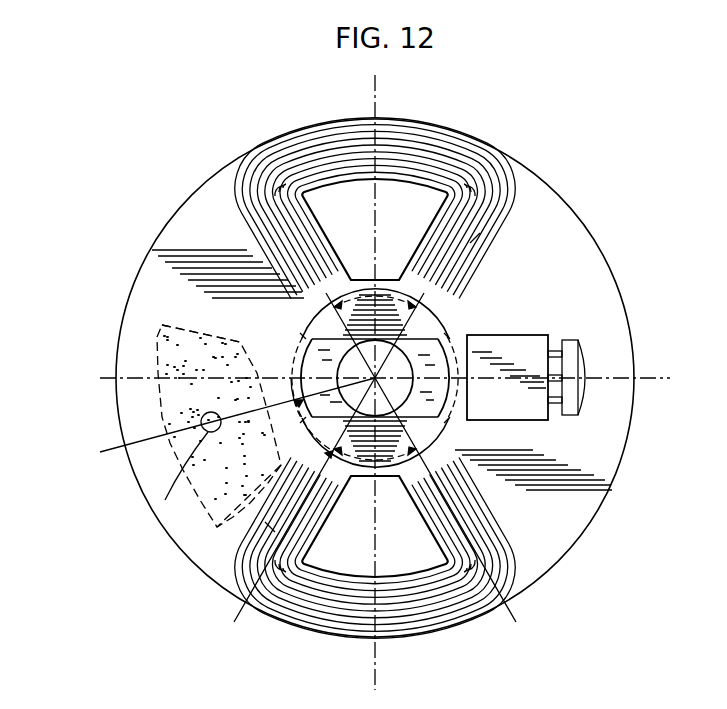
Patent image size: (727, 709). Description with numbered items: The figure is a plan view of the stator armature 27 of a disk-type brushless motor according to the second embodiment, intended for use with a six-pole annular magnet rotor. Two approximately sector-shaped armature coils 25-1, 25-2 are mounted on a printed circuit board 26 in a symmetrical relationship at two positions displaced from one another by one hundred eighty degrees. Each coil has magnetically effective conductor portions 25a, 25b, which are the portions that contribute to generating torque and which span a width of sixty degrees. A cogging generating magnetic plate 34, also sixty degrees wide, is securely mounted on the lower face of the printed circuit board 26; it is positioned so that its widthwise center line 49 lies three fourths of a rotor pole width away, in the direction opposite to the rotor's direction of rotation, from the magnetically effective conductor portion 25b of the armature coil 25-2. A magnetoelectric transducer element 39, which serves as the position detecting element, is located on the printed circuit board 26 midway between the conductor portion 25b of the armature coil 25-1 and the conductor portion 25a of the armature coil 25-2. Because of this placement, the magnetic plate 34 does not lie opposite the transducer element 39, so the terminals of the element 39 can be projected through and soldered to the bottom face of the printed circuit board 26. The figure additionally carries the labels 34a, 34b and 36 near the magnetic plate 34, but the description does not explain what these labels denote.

The stator armature 27 is at (631, 71).
The printed circuit board 26 is at (603, 407).
The armature coil 25-1 is at (448, 145).
The armature coil 25-2 is at (477, 528).
The magnetically effective conductor portion 25a is at (273, 240).
The magnetically effective conductor portion 25b is at (470, 243).
The magnetoelectric transducer element 39 is at (528, 335).
The cogging generating magnetic plate 34 is at (205, 480).
The magnet region edge 34a is at (246, 507).
The magnet region edge 34b is at (222, 338).
The boundary line 36 is at (180, 470).
The widthwise center line 49 is at (125, 445).